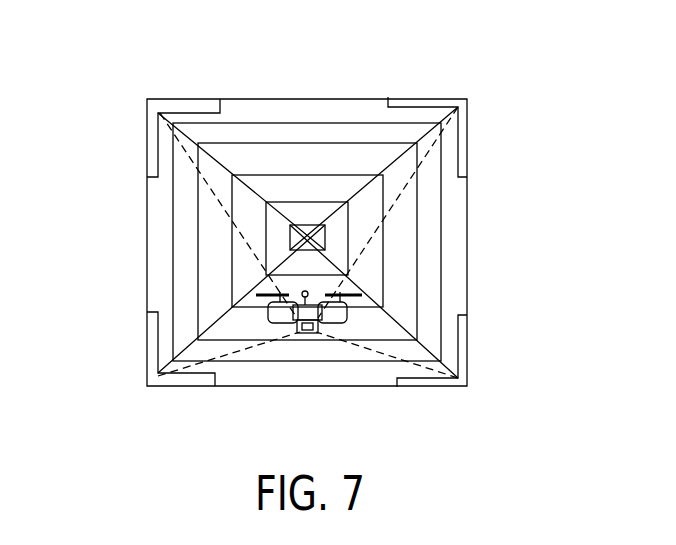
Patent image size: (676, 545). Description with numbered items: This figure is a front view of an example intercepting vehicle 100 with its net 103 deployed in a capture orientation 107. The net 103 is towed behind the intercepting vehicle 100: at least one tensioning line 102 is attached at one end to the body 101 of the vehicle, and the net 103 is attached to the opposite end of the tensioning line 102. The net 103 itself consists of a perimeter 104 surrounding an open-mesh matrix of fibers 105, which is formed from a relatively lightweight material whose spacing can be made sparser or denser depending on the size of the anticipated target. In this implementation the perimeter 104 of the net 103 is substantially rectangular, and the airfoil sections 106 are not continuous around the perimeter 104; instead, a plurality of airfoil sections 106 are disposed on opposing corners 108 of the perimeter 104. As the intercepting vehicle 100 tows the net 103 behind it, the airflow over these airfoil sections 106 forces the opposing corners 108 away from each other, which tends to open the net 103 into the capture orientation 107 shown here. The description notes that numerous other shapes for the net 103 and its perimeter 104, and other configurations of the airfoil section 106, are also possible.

The intercepting vehicle 100 is at (294, 344).
The body 101 is at (308, 335).
The tensioning line 102 is at (222, 208).
The net 103 is at (467, 270).
The perimeter 104 is at (467, 203).
The open-mesh matrix of fibers 105 is at (277, 122).
The airfoil section 106 is at (147, 140).
The capture orientation 107 is at (147, 287).
The opposing corners 108 is at (147, 98).